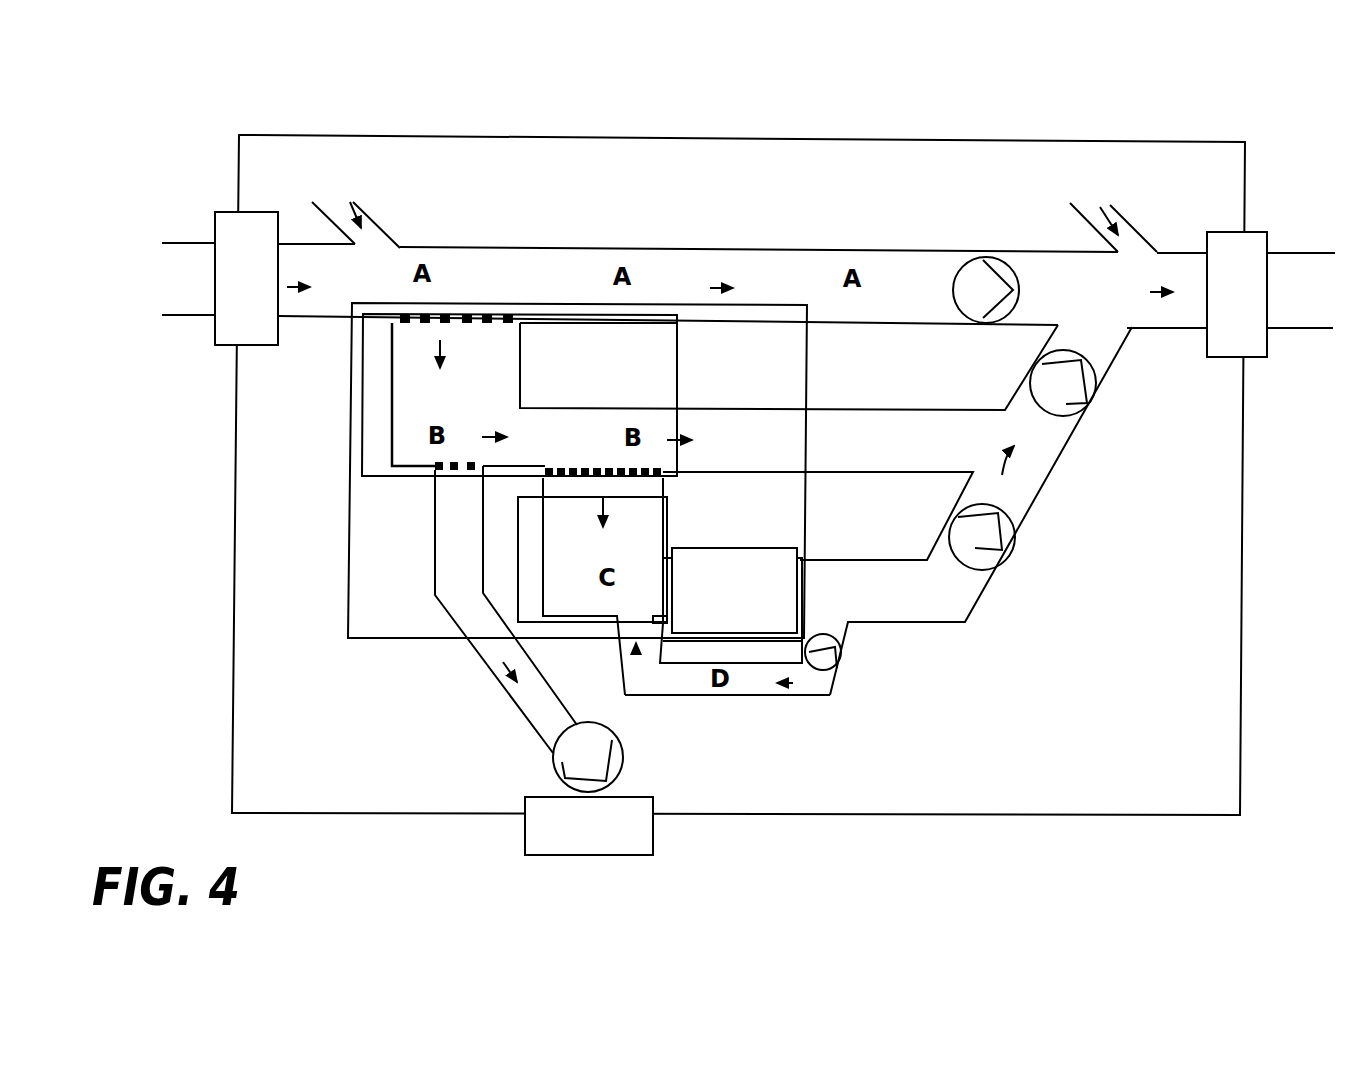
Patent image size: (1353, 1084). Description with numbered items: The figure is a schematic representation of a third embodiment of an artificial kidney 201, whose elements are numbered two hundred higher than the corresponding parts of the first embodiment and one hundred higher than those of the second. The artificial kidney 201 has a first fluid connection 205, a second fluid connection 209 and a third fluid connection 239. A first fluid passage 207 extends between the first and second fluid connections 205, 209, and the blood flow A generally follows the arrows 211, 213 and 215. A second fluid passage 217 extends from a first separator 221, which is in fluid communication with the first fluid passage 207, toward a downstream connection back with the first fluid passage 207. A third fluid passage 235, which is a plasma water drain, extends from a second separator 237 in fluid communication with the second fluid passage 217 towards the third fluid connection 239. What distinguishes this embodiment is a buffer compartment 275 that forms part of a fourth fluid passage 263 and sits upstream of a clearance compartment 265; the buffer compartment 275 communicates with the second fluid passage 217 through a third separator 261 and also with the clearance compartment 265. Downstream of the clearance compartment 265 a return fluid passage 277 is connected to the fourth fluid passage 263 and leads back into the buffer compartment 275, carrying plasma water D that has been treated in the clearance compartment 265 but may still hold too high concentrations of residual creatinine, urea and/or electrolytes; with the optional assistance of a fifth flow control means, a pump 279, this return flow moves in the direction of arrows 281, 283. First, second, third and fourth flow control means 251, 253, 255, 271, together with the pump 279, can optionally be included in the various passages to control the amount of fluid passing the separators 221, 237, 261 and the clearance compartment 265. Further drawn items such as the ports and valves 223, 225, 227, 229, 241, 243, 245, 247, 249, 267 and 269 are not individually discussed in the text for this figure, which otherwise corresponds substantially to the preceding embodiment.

The artificial kidney 201 is at (180, 120).
The first fluid connection 205 is at (246, 278).
The first fluid passage 207 is at (478, 267).
The second fluid connection 209 is at (1237, 294).
The arrow 211 is at (305, 275).
The arrow 213 is at (718, 285).
The arrow 215 is at (1163, 290).
The second fluid passage 217 is at (410, 442).
The first separator 221 is at (420, 325).
The return passage 223 is at (1122, 340).
The first chamber 225 is at (373, 413).
The housing block 227 is at (355, 620).
The inlet ports 229 is at (443, 358).
The third fluid passage 235 is at (460, 610).
The second separator 237 is at (457, 482).
The third fluid connection 239 is at (589, 826).
The drain flow 241 is at (502, 688).
The inlet valve 243 is at (332, 203).
The inlet valve flow 245 is at (355, 204).
The outlet valve 247 is at (1088, 202).
The outlet valve flow 249 is at (1118, 212).
The first flow control means 251 is at (972, 278).
The second flow control means 253 is at (1083, 410).
The third flow control means 255 is at (557, 762).
The third separator 261 is at (572, 466).
The fourth fluid passage 263 is at (935, 625).
The clearance compartment 265 is at (734, 590).
The transfer flow 267 is at (606, 510).
The return flow 269 is at (1042, 483).
The fourth flow control means 271 is at (998, 560).
The buffer compartment 275 is at (530, 623).
The return fluid passage 277 is at (683, 690).
The pump 279 is at (845, 650).
The arrow 281 is at (783, 695).
The arrow 283 is at (637, 652).